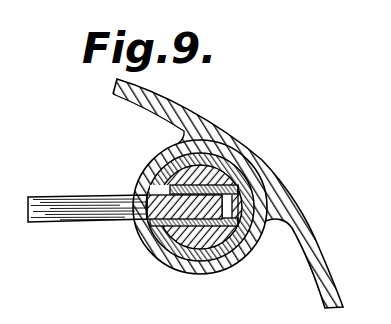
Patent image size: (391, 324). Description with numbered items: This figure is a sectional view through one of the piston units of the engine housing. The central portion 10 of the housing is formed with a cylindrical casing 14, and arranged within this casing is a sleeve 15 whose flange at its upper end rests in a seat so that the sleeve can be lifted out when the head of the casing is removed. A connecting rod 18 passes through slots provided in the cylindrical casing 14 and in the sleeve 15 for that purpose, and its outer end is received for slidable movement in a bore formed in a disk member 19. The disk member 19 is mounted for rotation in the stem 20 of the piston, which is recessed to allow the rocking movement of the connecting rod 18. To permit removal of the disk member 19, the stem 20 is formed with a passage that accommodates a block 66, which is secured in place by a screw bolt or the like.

The central portion of the housing 10 is at (322, 268).
The cylindrical casing 14 is at (245, 255).
The sleeve 15 is at (162, 185).
The connecting rod 18 is at (122, 210).
The disk member 19 is at (208, 184).
The stem 20 is at (208, 240).
The block 66 is at (240, 205).